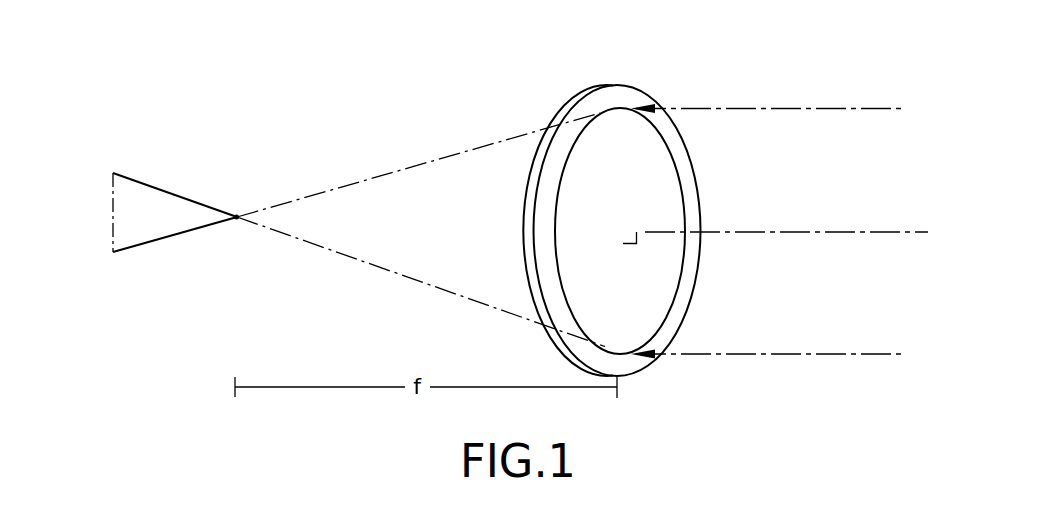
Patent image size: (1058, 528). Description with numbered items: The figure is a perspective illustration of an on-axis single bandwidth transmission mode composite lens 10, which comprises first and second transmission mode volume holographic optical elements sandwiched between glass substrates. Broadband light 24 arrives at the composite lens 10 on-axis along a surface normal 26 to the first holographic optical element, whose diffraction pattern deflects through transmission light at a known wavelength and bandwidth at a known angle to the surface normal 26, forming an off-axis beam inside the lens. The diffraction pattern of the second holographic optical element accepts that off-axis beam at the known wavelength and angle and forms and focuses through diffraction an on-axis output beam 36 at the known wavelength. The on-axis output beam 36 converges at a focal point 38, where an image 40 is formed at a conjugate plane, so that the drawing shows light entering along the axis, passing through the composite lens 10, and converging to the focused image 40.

The transmission mode composite lens 10 is at (640, 76).
The broadband light 24 is at (856, 108).
The surface normal 26 is at (870, 231).
The on-axis output beam 36 is at (389, 171).
The focal point 38 is at (236, 214).
The image 40 is at (92, 184).